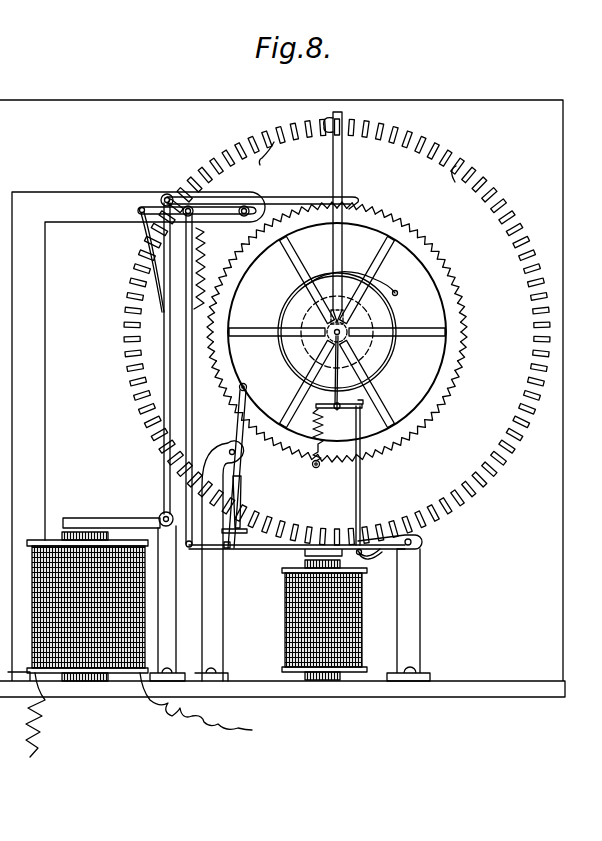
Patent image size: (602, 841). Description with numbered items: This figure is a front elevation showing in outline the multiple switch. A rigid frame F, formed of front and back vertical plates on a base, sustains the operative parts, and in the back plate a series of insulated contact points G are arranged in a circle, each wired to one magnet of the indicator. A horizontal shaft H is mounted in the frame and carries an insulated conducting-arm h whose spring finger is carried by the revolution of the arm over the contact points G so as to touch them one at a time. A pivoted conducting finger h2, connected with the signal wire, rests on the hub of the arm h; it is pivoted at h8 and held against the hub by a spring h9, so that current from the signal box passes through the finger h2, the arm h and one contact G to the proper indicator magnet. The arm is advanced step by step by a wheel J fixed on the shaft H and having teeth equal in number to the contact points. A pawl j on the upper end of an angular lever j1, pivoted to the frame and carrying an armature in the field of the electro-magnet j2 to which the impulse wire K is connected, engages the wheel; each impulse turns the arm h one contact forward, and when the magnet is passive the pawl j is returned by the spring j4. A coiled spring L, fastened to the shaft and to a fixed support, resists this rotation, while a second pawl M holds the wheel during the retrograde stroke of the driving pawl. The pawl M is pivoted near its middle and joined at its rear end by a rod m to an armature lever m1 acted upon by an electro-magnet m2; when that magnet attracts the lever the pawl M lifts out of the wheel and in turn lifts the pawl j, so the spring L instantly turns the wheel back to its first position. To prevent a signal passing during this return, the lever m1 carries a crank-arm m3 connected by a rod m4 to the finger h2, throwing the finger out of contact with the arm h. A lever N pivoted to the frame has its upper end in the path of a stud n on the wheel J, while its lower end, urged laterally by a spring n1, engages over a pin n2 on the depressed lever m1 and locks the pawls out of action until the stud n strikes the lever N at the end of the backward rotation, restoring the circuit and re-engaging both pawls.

The rigid frame F is at (330, 331).
The insulated contact points G is at (353, 170).
The wheel J is at (449, 337).
The horizontal shaft H is at (337, 332).
The coiled spring L is at (388, 366).
The conducting-arm h is at (343, 172).
The conducting finger h2 is at (344, 364).
The pivot of conducting finger h8 is at (338, 430).
The spring h9 is at (325, 442).
The second pawl M is at (282, 205).
The pawl j is at (262, 200).
The spring j4 is at (152, 228).
The angular lever j1 is at (128, 518).
The electro-magnet j2 is at (32, 566).
The rod m is at (216, 350).
The armature lever m1 is at (275, 547).
The electro-magnet m2 is at (314, 620).
The crank-arm m3 is at (377, 562).
The rod m4 is at (362, 500).
The lever N is at (226, 438).
The stud n is at (250, 387).
The spring n1 is at (244, 497).
The pin n2 is at (227, 549).
The impulse wire K is at (139, 715).